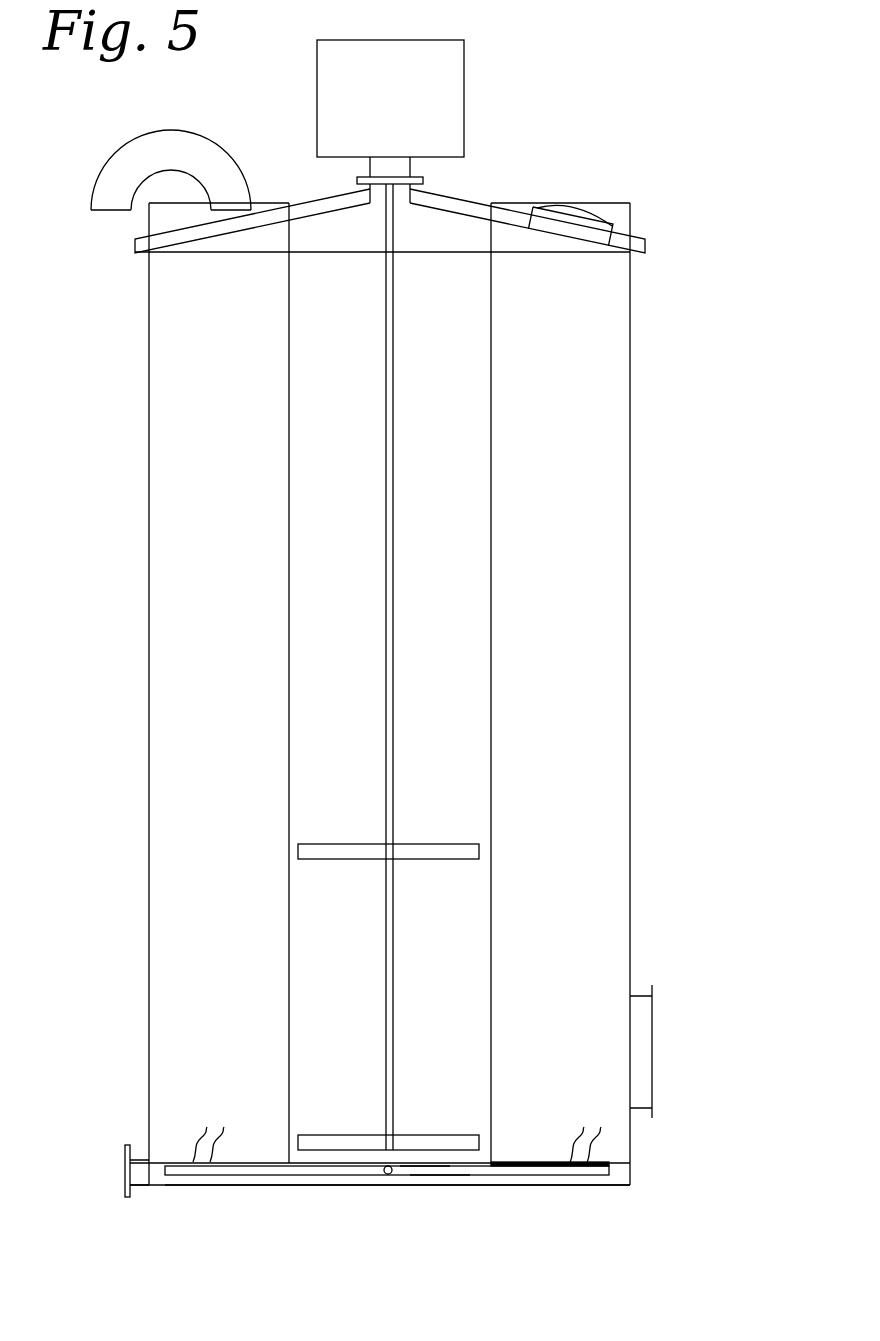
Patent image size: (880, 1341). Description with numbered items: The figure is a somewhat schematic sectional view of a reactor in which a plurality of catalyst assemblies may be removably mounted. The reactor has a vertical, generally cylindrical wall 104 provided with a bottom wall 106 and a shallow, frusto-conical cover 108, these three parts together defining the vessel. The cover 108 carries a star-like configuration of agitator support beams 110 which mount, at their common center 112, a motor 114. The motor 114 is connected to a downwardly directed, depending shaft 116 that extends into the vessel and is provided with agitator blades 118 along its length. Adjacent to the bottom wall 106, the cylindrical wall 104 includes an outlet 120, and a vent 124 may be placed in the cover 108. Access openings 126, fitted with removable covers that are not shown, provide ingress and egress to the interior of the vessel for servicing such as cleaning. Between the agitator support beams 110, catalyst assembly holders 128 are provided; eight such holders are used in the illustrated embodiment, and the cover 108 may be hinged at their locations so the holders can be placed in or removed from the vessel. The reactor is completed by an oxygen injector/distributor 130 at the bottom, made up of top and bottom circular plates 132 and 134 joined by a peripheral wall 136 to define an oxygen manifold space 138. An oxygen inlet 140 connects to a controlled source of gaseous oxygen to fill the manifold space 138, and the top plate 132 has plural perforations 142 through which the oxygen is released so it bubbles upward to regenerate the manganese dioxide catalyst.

The cylindrical wall 104 is at (630, 855).
The bottom wall 106 is at (537, 1185).
The frusto-conical cover 108 is at (452, 202).
The agitator support beams 110 is at (302, 200).
The common center 112 is at (410, 192).
The motor 114 is at (330, 63).
The depending shaft 116 is at (395, 643).
The agitator blades 118 is at (340, 850).
The outlet 120 is at (125, 1168).
The vent 124 is at (188, 146).
The access openings 126 is at (613, 228).
The catalyst assembly holders 128 is at (178, 774).
The oxygen injector/distributor 130 is at (537, 1155).
The top circular plate 132 is at (424, 1165).
The bottom circular plate 134 is at (441, 1176).
The peripheral wall 136 is at (612, 1171).
The oxygen manifold space 138 is at (508, 1165).
The oxygen inlet 140 is at (388, 1176).
The perforations 142 is at (405, 1134).